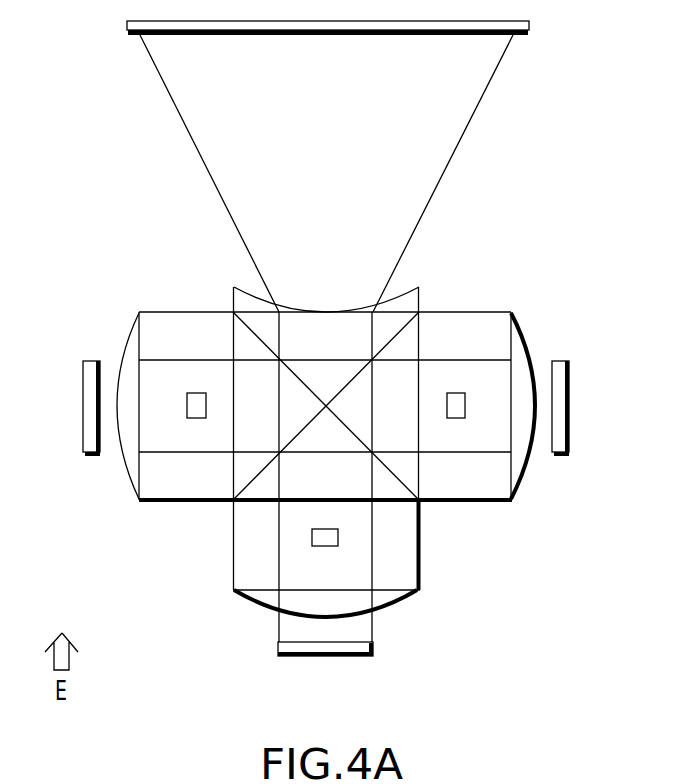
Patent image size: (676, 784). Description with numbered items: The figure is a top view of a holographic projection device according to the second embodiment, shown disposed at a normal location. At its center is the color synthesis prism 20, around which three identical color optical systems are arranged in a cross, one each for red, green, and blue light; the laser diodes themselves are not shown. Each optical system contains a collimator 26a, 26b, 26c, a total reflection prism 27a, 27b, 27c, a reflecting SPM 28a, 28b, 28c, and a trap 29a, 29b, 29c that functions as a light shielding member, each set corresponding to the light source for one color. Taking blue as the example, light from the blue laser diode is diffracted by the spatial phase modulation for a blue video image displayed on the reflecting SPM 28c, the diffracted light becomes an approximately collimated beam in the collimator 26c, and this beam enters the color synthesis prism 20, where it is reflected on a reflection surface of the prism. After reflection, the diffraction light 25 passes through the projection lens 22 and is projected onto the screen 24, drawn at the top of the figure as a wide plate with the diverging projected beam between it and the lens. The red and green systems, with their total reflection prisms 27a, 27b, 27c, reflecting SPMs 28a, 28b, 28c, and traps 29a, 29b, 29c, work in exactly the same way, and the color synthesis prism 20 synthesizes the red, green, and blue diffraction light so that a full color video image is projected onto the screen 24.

The color synthesis prism 20 is at (390, 490).
The projection lens 22 is at (243, 304).
The screen 24 is at (410, 36).
The diffraction light 25 is at (448, 163).
The collimator 26a is at (513, 343).
The collimator 26b is at (263, 598).
The collimator 26c is at (133, 350).
The total reflection prism 27a is at (477, 492).
The total reflection prism 27b is at (243, 523).
The total reflection prism 27c is at (172, 325).
The reflecting SPM 28a is at (569, 405).
The reflecting SPM 28b is at (325, 648).
The reflecting SPM 28c is at (83, 410).
The trap 29a is at (465, 410).
The trap 29b is at (312, 538).
The trap 29c is at (187, 410).